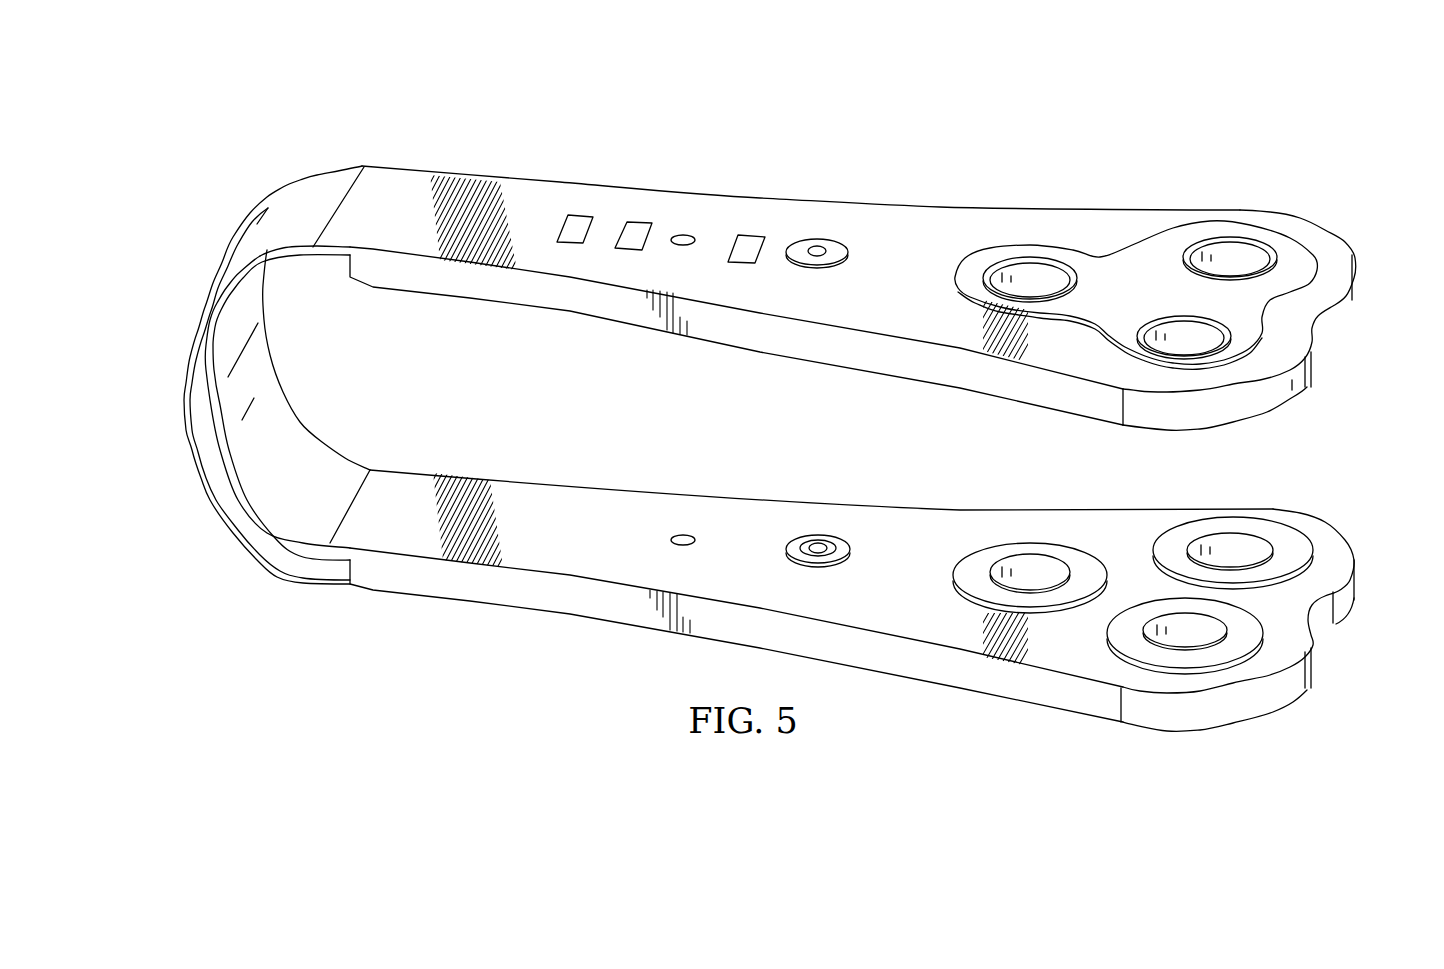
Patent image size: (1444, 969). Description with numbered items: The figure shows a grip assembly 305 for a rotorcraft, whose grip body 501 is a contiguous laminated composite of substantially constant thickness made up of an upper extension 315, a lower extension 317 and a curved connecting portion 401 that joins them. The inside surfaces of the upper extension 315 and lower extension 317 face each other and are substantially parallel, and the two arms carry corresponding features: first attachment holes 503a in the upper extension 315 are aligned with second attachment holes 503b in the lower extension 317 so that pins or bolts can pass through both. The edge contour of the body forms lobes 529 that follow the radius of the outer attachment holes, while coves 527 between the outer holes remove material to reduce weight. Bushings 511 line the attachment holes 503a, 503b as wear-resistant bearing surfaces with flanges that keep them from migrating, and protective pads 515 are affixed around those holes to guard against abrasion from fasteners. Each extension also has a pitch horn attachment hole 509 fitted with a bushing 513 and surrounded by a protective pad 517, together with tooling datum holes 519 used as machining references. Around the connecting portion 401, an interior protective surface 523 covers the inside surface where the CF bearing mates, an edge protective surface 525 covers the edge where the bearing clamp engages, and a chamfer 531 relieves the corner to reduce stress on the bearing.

The grip assembly 305 is at (1126, 100).
The upper extension 315 is at (945, 213).
The lower extension 317 is at (940, 513).
The connecting portion 401 is at (306, 188).
The grip body 501 is at (412, 182).
The first attachment holes 503a is at (1033, 283).
The second attachment holes 503b is at (1027, 573).
The pitch horn attachment holes 509 is at (818, 251).
The bushings 511 is at (1076, 558).
The bushings 513 is at (845, 546).
The protective pads 515 is at (1097, 267).
The protective pad 517 is at (843, 248).
The tooling datum holes 519 is at (683, 240).
The interior protective surface 523 is at (270, 417).
The edge protective surface 525 is at (203, 396).
The coves 527 is at (1317, 327).
The lobes 529 is at (1353, 290).
The chamfer 531 is at (303, 545).